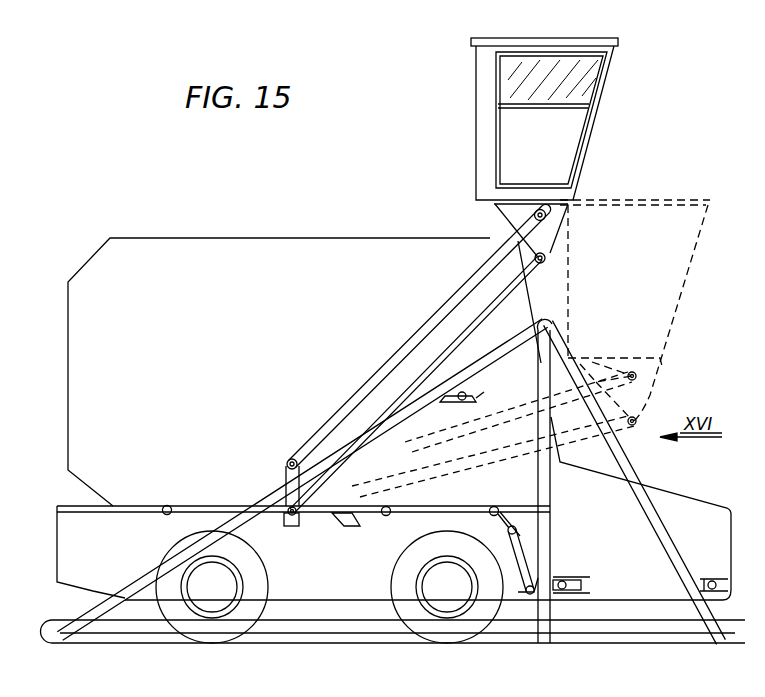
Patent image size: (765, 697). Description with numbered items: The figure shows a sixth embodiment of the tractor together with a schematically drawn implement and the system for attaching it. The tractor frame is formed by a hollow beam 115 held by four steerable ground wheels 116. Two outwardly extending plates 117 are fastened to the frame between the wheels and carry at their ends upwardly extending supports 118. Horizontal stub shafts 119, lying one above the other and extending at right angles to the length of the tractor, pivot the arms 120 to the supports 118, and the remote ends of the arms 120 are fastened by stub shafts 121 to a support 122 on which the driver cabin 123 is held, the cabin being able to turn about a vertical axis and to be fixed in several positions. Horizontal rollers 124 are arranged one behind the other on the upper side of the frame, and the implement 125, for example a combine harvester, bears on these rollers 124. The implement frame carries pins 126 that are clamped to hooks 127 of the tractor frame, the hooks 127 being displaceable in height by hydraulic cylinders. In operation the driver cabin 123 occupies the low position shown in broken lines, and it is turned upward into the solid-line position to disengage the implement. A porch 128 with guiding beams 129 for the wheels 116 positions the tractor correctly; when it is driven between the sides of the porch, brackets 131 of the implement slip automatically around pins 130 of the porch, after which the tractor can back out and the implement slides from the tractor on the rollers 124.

The hollow beam 115 is at (73, 523).
The steerable ground wheels 116 is at (165, 556).
The outwardly extending plates 117 is at (334, 520).
The upwardly extending supports 118 is at (286, 464).
The horizontal stub shafts 119 is at (292, 460).
The arms 120 is at (480, 328).
The stub shafts 121 is at (548, 256).
The support 122 is at (552, 215).
The driver cabin 123 is at (482, 80).
The horizontal rollers 124 is at (172, 500).
The implement 125 is at (352, 238).
The pins 126 is at (536, 548).
The hooks 127 is at (505, 557).
The porch 128 is at (634, 492).
The guiding beams 129 is at (308, 620).
The pins 130 is at (476, 398).
The brackets 131 is at (465, 401).